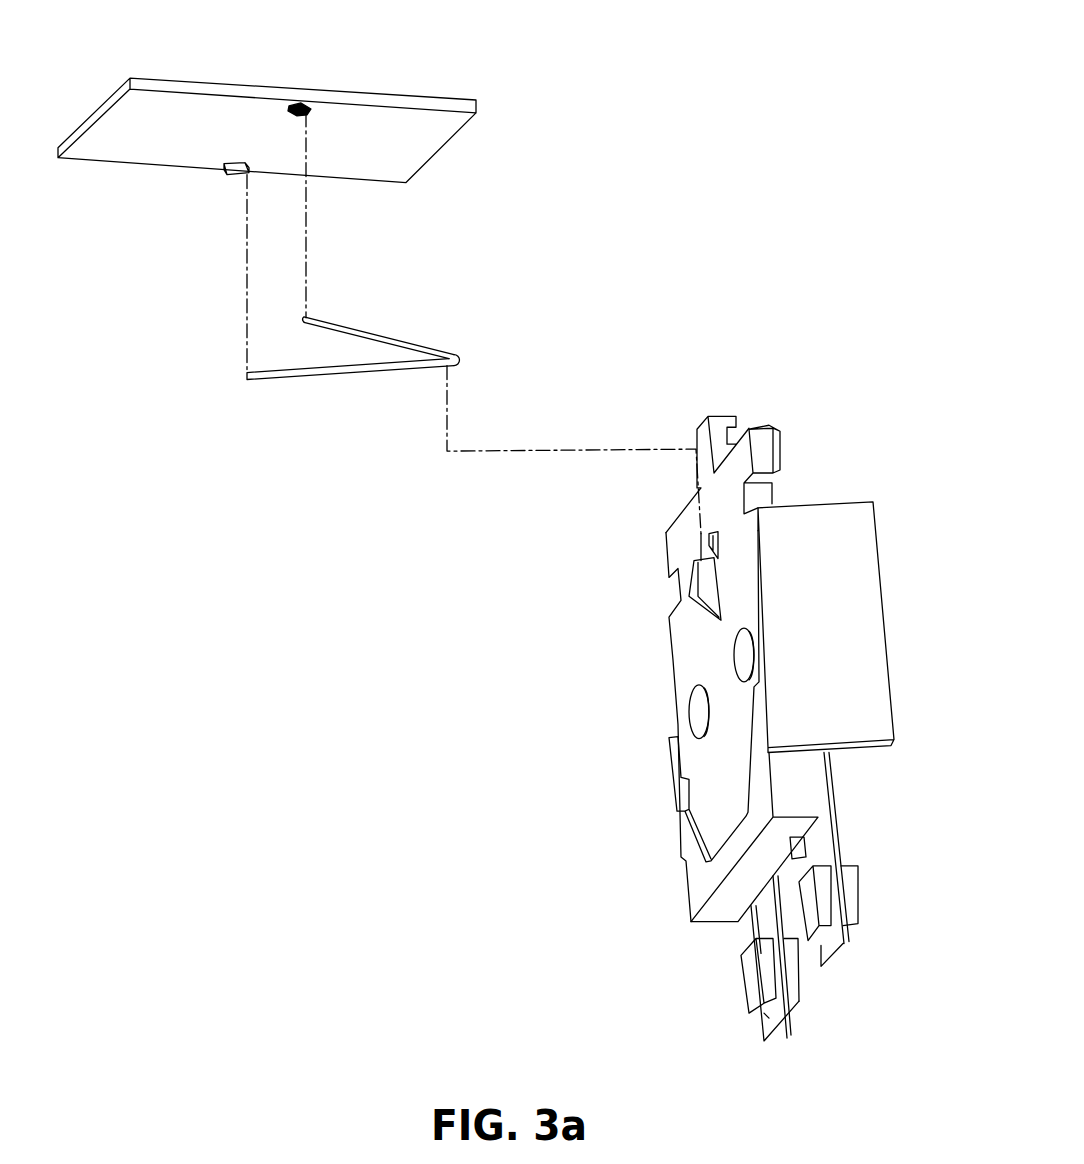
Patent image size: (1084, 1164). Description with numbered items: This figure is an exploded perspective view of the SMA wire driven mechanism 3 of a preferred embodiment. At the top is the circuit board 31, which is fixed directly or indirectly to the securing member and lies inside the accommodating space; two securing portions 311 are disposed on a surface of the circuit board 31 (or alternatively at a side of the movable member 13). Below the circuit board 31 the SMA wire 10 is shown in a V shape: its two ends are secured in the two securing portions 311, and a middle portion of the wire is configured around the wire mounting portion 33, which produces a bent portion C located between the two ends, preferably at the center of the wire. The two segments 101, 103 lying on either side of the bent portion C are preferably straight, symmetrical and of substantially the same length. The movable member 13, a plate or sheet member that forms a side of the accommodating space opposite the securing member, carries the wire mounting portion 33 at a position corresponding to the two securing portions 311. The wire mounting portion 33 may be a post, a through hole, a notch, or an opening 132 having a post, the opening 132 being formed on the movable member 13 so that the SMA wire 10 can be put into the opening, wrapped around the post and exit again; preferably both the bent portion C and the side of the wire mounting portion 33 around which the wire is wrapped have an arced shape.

The circuit board 31 is at (210, 89).
The securing portions 311 is at (302, 101).
The SMA wire driven mechanism 3 is at (241, 387).
The SMA wire 10 is at (370, 350).
The segment of SMA wire 101 is at (355, 332).
The segment of SMA wire 103 is at (308, 374).
The bent portion C is at (474, 332).
The movable member 13 is at (862, 600).
The opening 132 is at (707, 547).
The wire mounting portion 33 is at (697, 578).